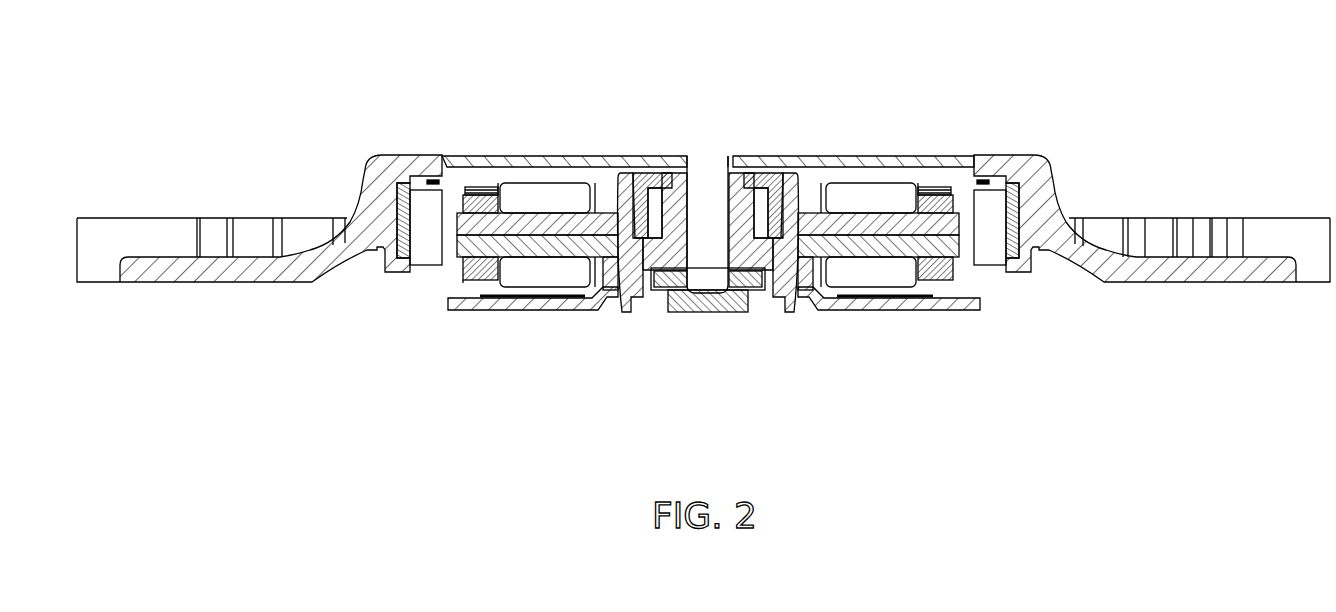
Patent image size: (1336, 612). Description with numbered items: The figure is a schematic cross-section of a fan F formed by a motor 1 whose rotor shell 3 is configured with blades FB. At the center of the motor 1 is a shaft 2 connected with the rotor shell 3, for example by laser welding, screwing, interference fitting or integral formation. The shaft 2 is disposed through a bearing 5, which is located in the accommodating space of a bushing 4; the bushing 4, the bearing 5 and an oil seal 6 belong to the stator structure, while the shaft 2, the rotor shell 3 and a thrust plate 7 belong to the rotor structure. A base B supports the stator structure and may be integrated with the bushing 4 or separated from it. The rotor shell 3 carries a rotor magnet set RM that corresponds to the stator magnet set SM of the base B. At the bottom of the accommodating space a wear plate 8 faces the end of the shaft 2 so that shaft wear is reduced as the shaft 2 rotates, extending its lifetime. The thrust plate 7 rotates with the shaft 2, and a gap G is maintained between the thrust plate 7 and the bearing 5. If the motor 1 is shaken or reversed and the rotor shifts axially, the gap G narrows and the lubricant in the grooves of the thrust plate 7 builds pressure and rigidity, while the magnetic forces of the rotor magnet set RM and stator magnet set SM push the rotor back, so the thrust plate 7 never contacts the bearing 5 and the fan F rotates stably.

The fan F is at (328, 82).
The blades FB is at (136, 230).
The motor 1 is at (465, 150).
The shaft 2 is at (716, 170).
The rotor shell 3 is at (556, 160).
The bushing 4 is at (623, 312).
The bearing 5 is at (740, 155).
The oil seal 6 is at (647, 170).
The thrust plate 7 is at (670, 307).
The wear plate 8 is at (700, 297).
The gap G is at (788, 290).
The base B is at (905, 310).
The rotor magnet set RM is at (422, 253).
The stator magnet set SM is at (868, 190).